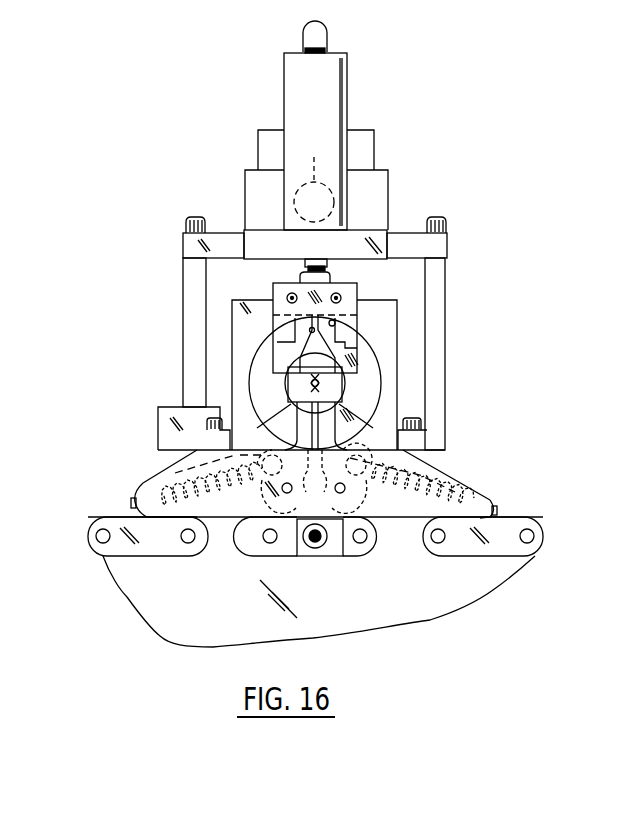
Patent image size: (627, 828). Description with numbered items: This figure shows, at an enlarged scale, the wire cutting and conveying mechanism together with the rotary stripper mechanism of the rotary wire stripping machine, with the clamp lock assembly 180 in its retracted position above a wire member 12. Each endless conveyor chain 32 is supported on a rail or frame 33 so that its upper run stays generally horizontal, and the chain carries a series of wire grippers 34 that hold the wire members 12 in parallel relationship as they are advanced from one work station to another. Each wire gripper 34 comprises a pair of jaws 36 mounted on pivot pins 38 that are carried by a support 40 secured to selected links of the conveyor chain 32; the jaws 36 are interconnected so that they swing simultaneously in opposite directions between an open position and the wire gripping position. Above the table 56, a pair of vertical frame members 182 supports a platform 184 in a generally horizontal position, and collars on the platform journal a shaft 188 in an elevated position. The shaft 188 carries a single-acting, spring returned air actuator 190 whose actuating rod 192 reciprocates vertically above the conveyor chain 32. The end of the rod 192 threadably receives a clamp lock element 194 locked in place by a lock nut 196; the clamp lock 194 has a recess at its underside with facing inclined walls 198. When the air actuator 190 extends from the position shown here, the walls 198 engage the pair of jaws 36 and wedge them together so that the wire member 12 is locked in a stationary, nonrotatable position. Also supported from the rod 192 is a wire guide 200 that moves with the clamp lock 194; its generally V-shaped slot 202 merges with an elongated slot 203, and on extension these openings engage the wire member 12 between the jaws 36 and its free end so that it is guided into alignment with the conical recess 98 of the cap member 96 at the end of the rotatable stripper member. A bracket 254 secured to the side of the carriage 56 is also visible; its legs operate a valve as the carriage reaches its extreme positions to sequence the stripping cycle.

The wire member 12 is at (285, 390).
The conveyor chains 32 is at (517, 520).
The rail or frame 33 is at (490, 586).
The wire gripper 34 is at (450, 463).
The jaws 36 is at (315, 424).
The pivot pins 38 is at (335, 489).
The support 40 is at (458, 476).
The table 56 is at (378, 390).
The cap member 96 is at (330, 383).
The conical recess 98 is at (320, 378).
The clamp lock assembly 180 is at (363, 117).
The vertical frame members 182 is at (190, 265).
The platform 184 is at (447, 248).
The shaft 188 is at (312, 179).
The air actuator 190 is at (347, 68).
The actuating rod 192 is at (323, 263).
The clamp lock element 194 is at (273, 291).
The lock nut 196 is at (299, 278).
The inclined walls 198 is at (336, 327).
The wire guide 200 is at (350, 353).
The V-shaped slot 202 is at (232, 348).
The elongated slot 203 is at (310, 329).
The bracket 254 is at (162, 418).